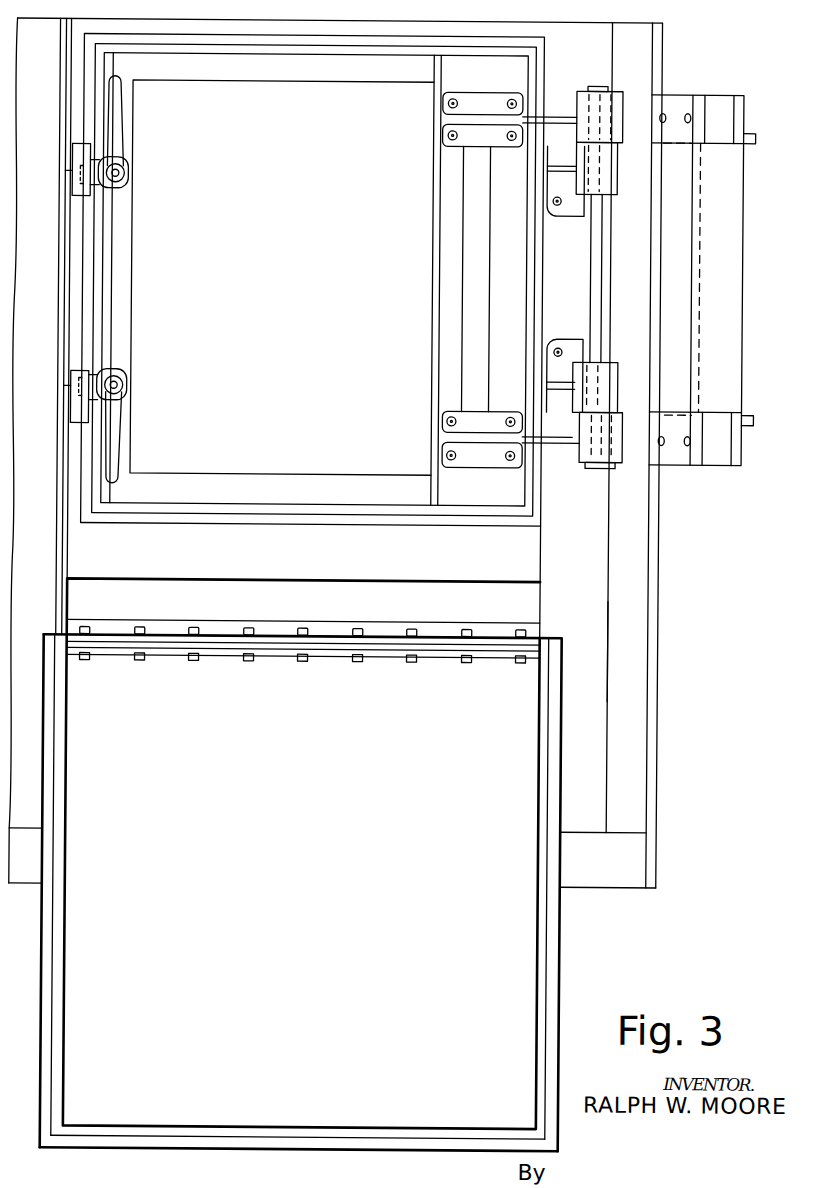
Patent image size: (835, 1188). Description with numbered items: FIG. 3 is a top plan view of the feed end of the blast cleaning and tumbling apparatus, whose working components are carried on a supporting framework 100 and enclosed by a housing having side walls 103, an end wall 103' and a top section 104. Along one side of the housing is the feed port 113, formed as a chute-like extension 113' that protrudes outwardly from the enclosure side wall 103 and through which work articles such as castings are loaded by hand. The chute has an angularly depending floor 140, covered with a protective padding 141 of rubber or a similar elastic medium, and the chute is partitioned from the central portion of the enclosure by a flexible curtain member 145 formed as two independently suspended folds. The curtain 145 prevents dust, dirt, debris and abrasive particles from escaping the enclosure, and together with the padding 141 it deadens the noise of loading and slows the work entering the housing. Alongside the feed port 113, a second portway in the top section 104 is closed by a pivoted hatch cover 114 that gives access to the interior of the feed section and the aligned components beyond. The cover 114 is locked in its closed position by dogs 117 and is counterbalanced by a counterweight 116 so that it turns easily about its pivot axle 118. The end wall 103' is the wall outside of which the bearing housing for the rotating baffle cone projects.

The supporting framework 100 is at (664, 758).
The side walls 103 is at (367, 453).
The end wall 103' is at (665, 652).
The top section 104 is at (594, 566).
The feed port 113 is at (336, 893).
The chute-like extension 113' is at (298, 1167).
The hatch cover 114 is at (350, 302).
The counterweight 116 is at (735, 296).
The dogs 117 is at (111, 119).
The pivot axle 118 is at (590, 281).
The floor 140 is at (187, 1129).
The protective padding 141 is at (303, 888).
The flexible curtain member 145 is at (279, 661).